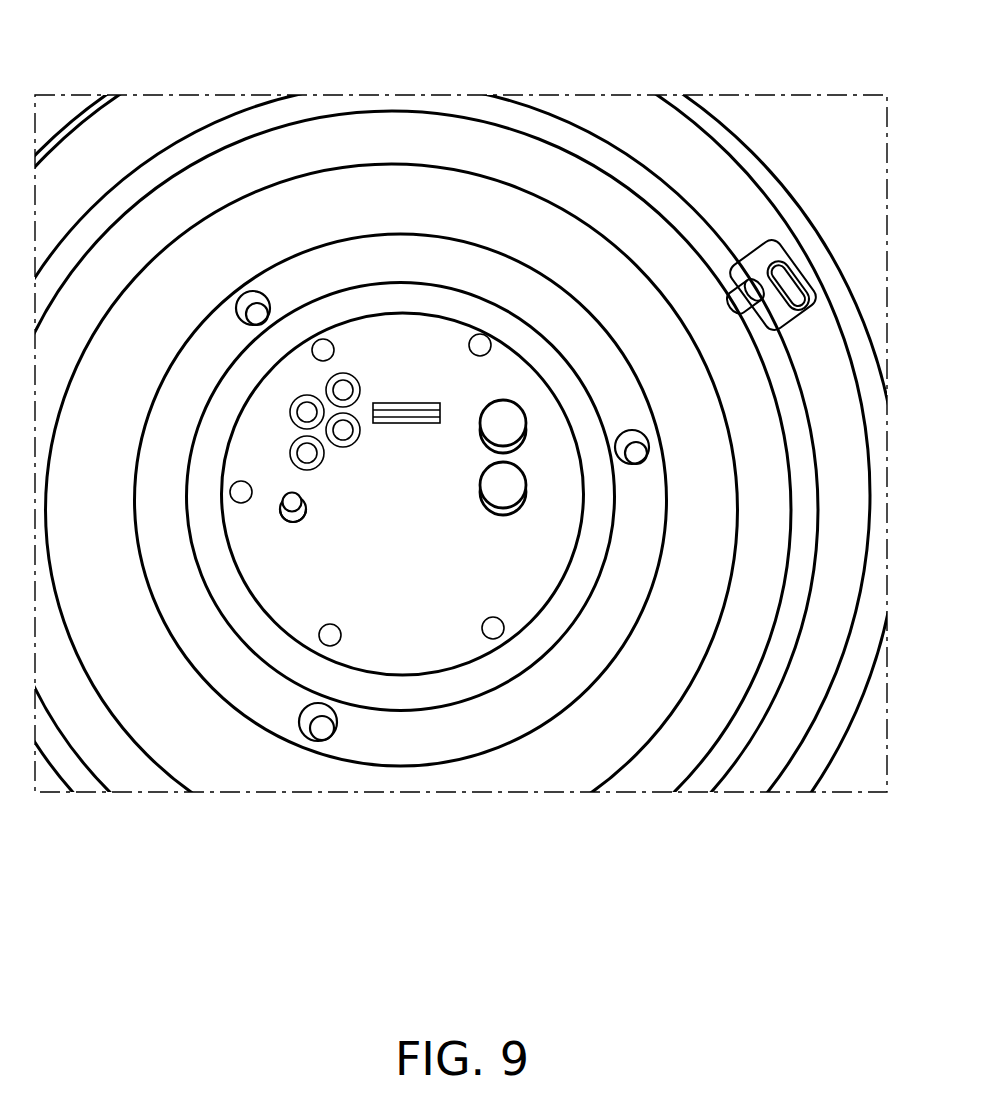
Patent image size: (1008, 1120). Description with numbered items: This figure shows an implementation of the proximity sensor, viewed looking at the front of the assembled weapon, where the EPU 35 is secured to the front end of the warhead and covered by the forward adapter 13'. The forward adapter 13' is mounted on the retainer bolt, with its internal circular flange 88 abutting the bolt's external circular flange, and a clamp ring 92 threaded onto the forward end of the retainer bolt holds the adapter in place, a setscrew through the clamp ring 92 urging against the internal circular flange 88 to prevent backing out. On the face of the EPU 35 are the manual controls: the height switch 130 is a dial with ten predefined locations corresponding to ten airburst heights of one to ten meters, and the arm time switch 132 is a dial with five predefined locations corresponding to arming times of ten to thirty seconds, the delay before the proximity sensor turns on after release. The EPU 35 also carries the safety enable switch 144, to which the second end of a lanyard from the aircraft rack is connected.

The forward adapter 13' is at (461, 489).
The EPU 35 is at (363, 673).
The internal circular flange 88 is at (648, 690).
The clamp ring 92 is at (452, 740).
The height switch 130 is at (504, 422).
The arm time switch 132 is at (523, 498).
The safety enable switch 144 is at (291, 504).